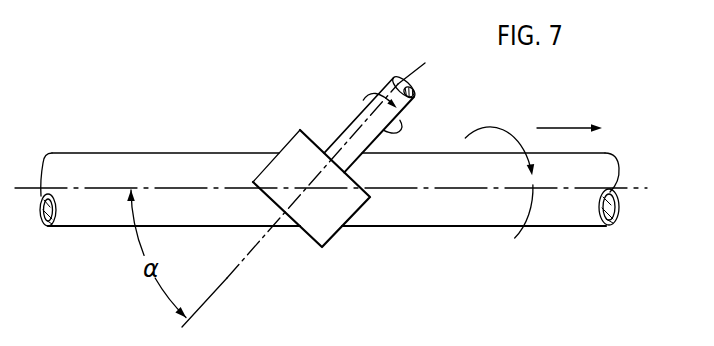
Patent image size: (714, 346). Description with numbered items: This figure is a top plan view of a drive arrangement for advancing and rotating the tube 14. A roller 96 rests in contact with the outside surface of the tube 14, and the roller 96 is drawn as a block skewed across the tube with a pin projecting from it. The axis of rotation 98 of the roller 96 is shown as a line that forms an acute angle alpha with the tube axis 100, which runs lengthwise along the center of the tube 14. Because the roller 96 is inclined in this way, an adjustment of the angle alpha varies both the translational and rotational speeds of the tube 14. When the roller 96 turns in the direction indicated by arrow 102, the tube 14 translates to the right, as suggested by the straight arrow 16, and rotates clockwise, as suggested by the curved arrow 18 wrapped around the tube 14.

The tube 14 is at (172, 148).
The direction of rod advance 16 is at (560, 128).
The direction of rod rotation 18 is at (490, 128).
The roller 96 is at (287, 143).
The axis of rotation 98 is at (227, 282).
The tube axis 100 is at (185, 191).
The arrow 102 is at (363, 100).